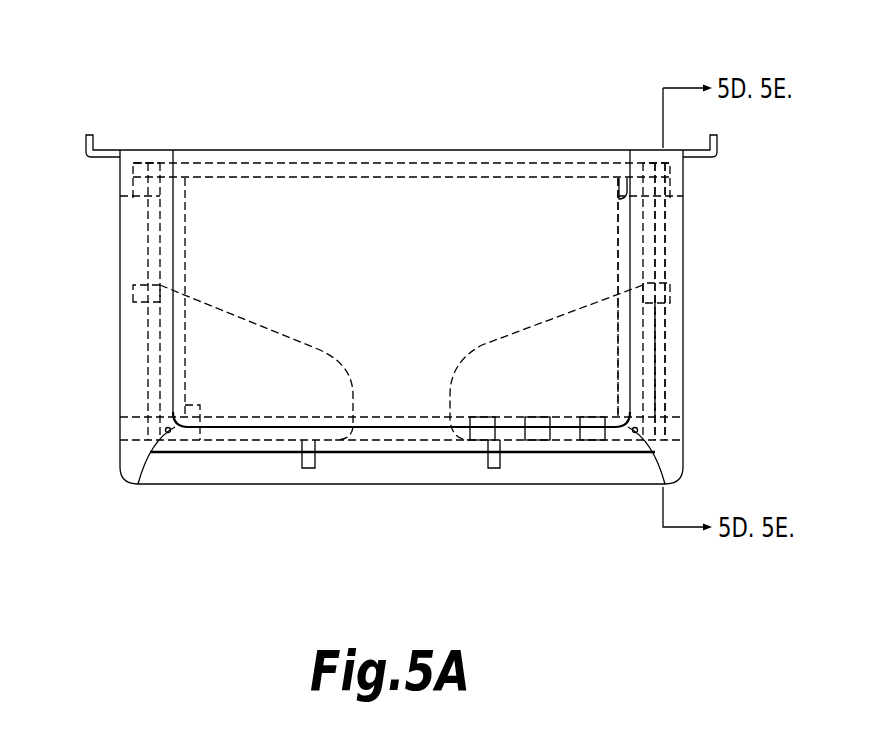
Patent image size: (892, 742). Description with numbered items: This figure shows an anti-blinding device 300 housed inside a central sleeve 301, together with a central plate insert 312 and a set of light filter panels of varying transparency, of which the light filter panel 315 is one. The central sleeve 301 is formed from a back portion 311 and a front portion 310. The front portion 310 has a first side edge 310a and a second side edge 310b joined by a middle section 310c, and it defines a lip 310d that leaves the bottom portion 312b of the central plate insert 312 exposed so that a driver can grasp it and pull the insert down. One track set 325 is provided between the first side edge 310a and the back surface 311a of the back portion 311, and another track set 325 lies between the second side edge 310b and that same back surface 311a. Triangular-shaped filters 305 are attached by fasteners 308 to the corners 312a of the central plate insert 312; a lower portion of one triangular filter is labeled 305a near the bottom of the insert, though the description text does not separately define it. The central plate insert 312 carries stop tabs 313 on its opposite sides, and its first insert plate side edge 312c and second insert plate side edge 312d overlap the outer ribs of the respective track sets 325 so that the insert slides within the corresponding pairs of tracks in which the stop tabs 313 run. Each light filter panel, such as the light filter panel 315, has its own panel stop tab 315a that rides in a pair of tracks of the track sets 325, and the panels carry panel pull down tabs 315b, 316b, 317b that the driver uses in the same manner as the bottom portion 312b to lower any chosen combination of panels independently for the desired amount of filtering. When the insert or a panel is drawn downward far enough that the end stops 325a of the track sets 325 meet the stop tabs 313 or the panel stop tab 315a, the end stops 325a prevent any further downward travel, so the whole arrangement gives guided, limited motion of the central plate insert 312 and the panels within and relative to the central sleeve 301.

The anti-blinding device 300 is at (78, 102).
The central sleeve 301 is at (685, 282).
The triangular-shaped filters 305 is at (295, 357).
The fluid chamber outlet 305a is at (199, 438).
The fasteners 308 is at (172, 432).
The front portion 310 is at (432, 108).
The first side edge 310a is at (120, 217).
The second side edge 310b is at (683, 270).
The middle section 310c is at (292, 207).
The lip 310d is at (388, 427).
The back portion 311 is at (622, 466).
The back surface 311a is at (393, 467).
The central plate insert 312 is at (650, 238).
The corners 312a is at (157, 443).
The bottom portion 312b is at (327, 443).
The first insert plate side edge 312c is at (655, 315).
The second insert plate side edge 312d is at (150, 313).
The stop tabs 313 is at (667, 170).
The light filter panel 315 is at (620, 203).
The panel stop tab 315a is at (643, 180).
The panel pull down tab 315b is at (482, 433).
The panel pull down tab 316b is at (535, 433).
The panel pull down tab 317b is at (592, 433).
The track set 325 is at (670, 360).
The end stops 325a is at (677, 430).